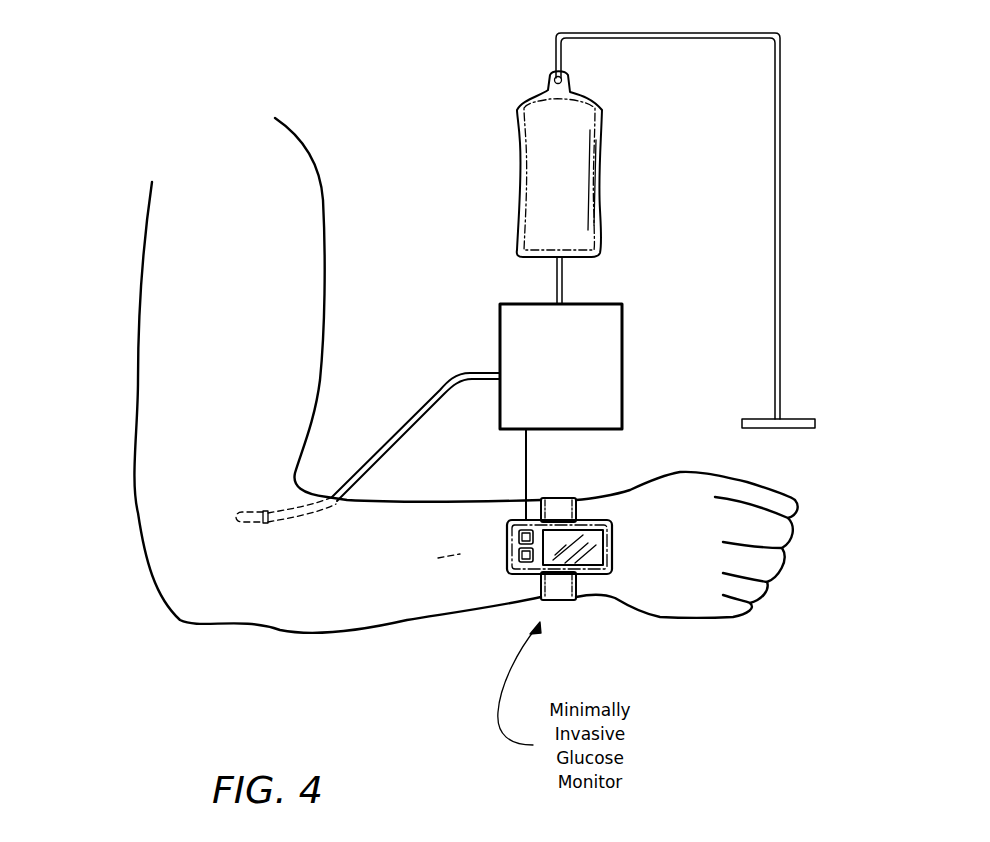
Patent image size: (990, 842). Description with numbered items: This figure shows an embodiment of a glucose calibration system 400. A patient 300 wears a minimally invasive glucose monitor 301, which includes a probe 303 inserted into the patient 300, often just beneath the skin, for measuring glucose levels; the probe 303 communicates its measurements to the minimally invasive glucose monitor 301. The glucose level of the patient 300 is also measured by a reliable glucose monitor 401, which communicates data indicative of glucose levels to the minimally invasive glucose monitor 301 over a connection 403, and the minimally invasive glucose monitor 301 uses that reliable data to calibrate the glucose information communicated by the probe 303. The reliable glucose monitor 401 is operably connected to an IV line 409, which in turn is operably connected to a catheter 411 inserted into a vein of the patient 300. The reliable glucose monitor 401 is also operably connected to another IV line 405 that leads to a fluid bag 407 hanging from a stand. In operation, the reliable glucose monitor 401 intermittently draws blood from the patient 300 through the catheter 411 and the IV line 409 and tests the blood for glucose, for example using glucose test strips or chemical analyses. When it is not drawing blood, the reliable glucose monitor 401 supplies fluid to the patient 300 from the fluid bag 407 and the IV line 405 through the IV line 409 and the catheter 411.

The patient 300 is at (152, 361).
The minimally invasive glucose monitor 301 is at (595, 520).
The probe 303 is at (507, 545).
The glucose calibration system 400 is at (883, 159).
The reliable glucose monitor 401 is at (625, 368).
The data connection to minimally invasive monitor 403 is at (526, 471).
The IV line 405 is at (566, 288).
The fluid bag 407 is at (600, 153).
The IV line 409 is at (441, 390).
The catheter 411 is at (254, 523).